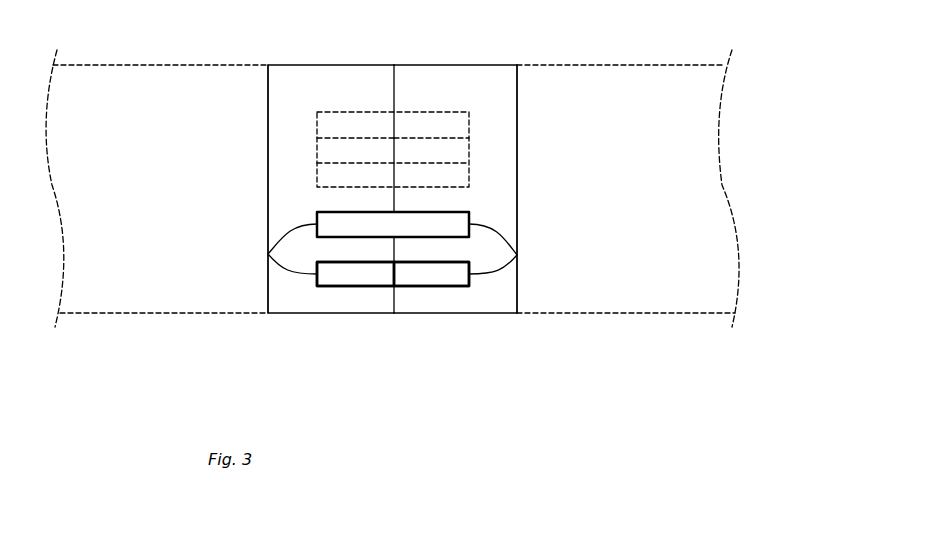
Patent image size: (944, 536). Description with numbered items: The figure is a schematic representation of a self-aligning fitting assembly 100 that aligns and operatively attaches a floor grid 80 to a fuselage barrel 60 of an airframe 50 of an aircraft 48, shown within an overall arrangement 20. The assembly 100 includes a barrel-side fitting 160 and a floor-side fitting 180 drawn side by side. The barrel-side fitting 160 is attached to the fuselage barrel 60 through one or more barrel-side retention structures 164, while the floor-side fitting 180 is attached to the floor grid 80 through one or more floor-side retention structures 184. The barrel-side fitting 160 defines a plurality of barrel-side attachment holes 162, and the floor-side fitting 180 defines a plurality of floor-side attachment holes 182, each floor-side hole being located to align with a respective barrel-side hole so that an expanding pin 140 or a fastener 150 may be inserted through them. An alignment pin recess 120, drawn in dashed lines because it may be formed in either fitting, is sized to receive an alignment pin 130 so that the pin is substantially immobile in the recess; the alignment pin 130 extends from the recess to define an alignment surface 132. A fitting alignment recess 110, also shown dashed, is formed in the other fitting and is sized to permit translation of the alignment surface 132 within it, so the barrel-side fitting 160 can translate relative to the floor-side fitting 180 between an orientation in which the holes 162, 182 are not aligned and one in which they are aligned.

The cooling system 20 is at (526, 477).
The aircraft 48 is at (503, 402).
The airframe 50 is at (461, 400).
The fuselage barrel 60 is at (122, 318).
The floor grid 80 is at (633, 318).
The self-aligning fitting assembly 100 is at (416, 387).
The fitting alignment recess 110 is at (367, 111).
The alignment pin recess 120 is at (328, 137).
The alignment pin 130 is at (453, 148).
The alignment surface 132 is at (430, 138).
The expanding pin 140 is at (360, 270).
The fastener 150 is at (422, 270).
The barrel-side fitting 160 is at (317, 318).
The barrel-side attachment holes 162 is at (268, 254).
The barrel-side retention structures 164 is at (268, 143).
The floor-side fitting 180 is at (457, 318).
The floor-side attachment holes 182 is at (517, 255).
The floor-side retention structures 184 is at (517, 160).